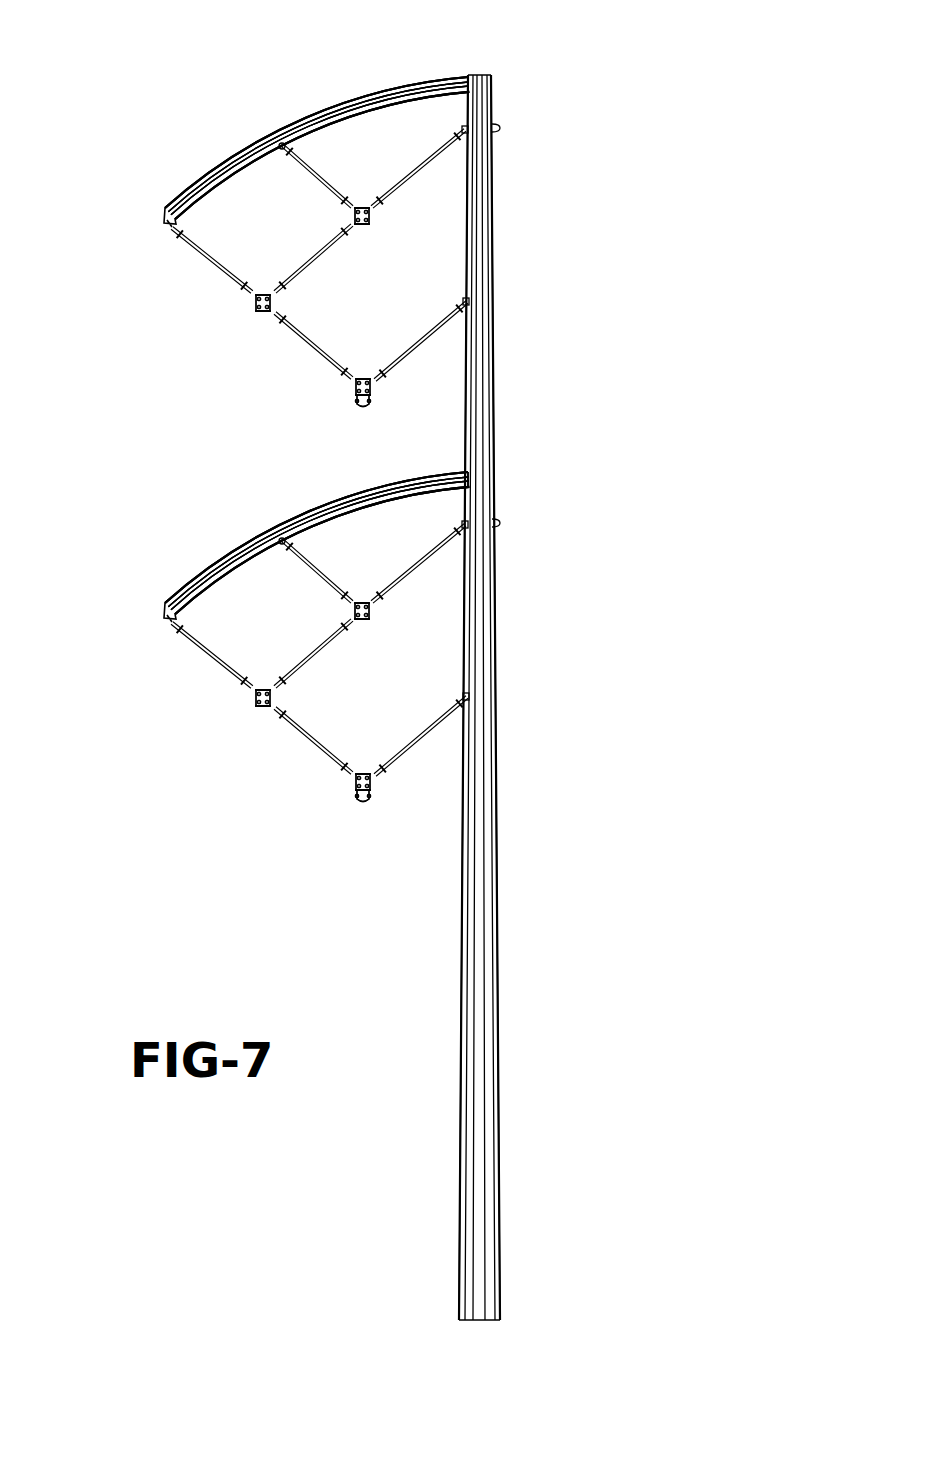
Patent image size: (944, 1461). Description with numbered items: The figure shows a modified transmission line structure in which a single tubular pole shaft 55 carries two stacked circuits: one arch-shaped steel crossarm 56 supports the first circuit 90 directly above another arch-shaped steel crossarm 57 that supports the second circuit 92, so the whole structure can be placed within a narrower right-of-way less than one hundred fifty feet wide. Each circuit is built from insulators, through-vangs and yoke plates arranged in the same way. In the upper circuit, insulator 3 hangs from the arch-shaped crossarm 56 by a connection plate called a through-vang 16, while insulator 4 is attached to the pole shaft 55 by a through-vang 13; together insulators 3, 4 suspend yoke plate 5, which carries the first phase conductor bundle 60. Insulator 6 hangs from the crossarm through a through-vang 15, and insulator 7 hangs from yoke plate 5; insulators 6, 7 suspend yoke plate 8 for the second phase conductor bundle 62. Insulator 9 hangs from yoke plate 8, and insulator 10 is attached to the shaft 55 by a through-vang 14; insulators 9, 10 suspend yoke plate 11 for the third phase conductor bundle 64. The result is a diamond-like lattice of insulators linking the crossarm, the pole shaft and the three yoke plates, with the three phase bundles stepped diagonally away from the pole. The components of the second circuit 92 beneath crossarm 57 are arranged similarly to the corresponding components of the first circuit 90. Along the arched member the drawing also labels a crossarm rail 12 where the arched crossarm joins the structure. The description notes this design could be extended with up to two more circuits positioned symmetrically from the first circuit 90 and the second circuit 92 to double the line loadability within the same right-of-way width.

The insulator 3 is at (330, 187).
The insulator 4 is at (412, 175).
The yoke plate 5 is at (370, 221).
The insulator 6 is at (215, 264).
The insulator 7 is at (314, 260).
The yoke plate 8 is at (254, 310).
The insulator 9 is at (306, 340).
The insulator 10 is at (410, 351).
The yoke plate 11 is at (350, 392).
The arched rail 12 is at (264, 132).
The through-vang 13 is at (464, 129).
The through-vang 14 is at (466, 300).
The through-vang 15 is at (167, 220).
The through-vang 16 is at (281, 146).
The tubular pole shaft 55 is at (488, 910).
The arch-shaped steel crossarm 56 is at (362, 96).
The arch-shaped steel crossarm 57 is at (320, 507).
The first phase conductor bundle 60 is at (360, 236).
The second phase conductor bundle 62 is at (255, 333).
The third phase conductor bundle 64 is at (357, 410).
The Circuit No. 1 90 is at (157, 400).
The Circuit No. 2 92 is at (157, 795).